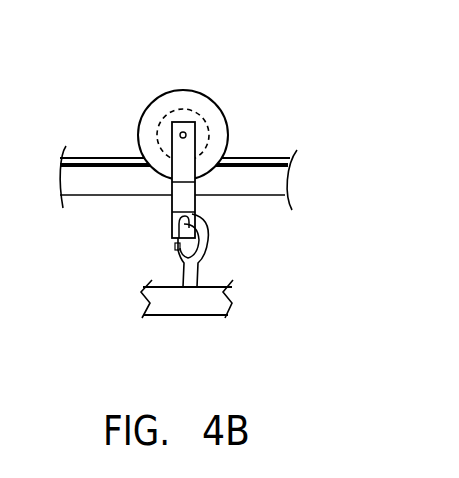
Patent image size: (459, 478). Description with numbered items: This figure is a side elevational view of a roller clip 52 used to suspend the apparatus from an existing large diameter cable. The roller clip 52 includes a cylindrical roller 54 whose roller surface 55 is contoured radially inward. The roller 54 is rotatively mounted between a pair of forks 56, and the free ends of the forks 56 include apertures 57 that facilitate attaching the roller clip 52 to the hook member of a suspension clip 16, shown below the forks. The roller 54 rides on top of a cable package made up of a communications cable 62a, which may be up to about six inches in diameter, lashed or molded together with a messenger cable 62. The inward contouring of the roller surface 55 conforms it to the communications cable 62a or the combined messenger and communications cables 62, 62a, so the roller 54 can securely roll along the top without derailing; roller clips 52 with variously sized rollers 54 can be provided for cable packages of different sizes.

The suspension clip 16 is at (207, 242).
The roller clip 52 is at (222, 95).
The cylindrical roller 54 is at (180, 98).
The roller surface 55 is at (167, 118).
The forks 56 is at (195, 203).
The apertures 57 is at (175, 218).
The messenger cable 62 is at (265, 155).
The communications cable 62a is at (283, 183).